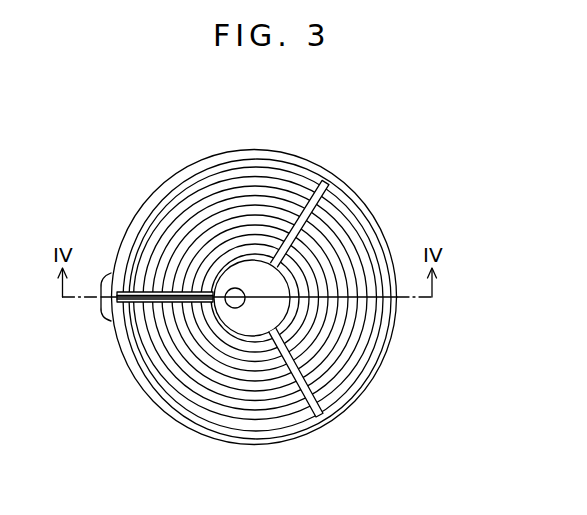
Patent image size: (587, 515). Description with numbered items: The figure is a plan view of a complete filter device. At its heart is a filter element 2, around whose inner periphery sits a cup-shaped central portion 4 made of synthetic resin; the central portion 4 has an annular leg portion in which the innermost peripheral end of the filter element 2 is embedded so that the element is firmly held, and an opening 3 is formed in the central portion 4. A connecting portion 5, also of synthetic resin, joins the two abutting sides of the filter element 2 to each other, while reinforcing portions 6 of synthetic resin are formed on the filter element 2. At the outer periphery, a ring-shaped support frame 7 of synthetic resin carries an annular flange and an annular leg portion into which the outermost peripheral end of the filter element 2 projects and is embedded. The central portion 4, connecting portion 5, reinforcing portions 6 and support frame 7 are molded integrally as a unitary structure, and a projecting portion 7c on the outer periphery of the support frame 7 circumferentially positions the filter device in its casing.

The filter element 2 is at (335, 368).
The opening 3 is at (229, 293).
The central portion 4 is at (281, 273).
The connecting portion 5 is at (140, 303).
The reinforcing portions 6 is at (325, 183).
The support frame 7 is at (390, 338).
The projecting portion 7c is at (107, 273).